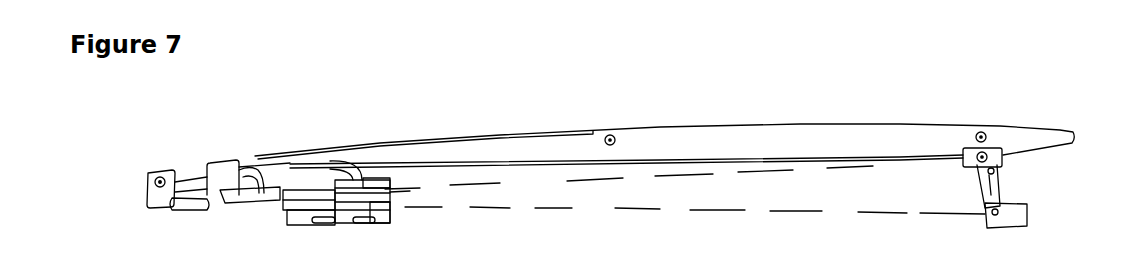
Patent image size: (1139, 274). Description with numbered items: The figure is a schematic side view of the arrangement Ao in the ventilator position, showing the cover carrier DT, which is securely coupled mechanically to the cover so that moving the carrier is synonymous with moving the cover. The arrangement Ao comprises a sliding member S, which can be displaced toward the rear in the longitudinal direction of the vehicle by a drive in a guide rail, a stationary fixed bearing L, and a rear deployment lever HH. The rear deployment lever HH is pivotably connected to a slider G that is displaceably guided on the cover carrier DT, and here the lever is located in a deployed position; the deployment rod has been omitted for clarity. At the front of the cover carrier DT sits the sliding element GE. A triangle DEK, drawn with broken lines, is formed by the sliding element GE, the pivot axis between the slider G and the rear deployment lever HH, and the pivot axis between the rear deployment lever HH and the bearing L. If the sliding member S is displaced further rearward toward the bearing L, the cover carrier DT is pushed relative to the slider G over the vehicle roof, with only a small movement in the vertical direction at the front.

The arrangement Ao is at (1084, 68).
The cover carrier DT is at (850, 128).
The triangle DEK is at (703, 211).
The slider G is at (1003, 158).
The rear deployment lever HH is at (1000, 183).
The bearing L is at (1010, 226).
The sliding element GE is at (167, 210).
The sliding member S is at (345, 226).